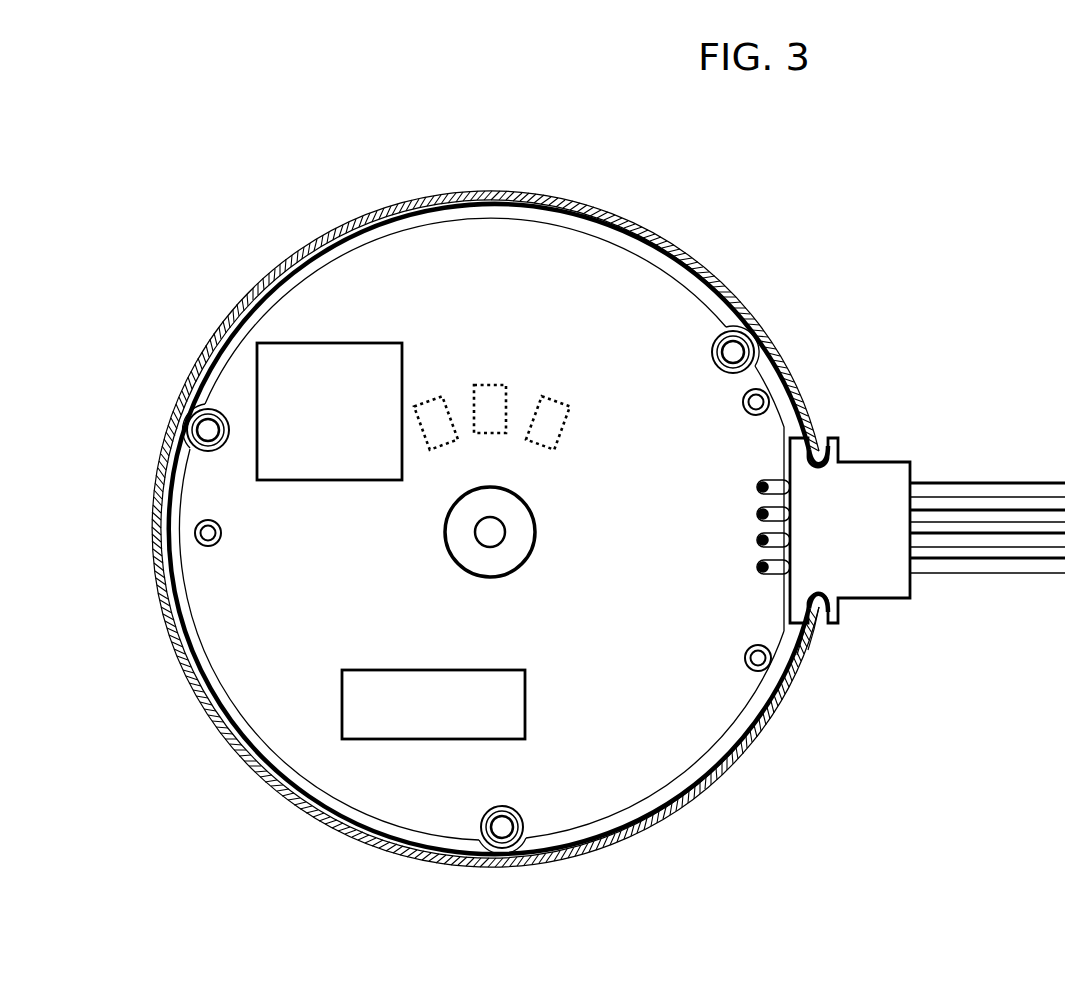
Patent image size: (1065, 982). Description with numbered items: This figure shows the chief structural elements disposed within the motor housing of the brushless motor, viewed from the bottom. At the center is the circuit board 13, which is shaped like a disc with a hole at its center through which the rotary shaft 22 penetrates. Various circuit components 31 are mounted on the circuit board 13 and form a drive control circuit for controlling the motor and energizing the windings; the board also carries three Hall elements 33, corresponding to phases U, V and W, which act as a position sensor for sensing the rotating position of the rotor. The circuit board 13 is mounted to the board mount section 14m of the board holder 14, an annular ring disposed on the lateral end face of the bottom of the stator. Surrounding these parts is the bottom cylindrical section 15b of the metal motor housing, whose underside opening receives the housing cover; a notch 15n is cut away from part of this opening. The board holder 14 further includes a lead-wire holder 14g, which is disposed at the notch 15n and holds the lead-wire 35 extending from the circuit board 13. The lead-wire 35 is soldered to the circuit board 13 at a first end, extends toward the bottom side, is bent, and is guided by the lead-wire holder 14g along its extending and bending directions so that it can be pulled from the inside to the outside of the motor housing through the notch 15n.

The circuit board 13 is at (263, 687).
The board holder 14 is at (752, 743).
The lead-wire holder 14g is at (873, 592).
The board mount section 14m is at (803, 658).
The bottom cylindrical section 15b is at (303, 250).
The notch 15n is at (825, 452).
The rotary shaft 22 is at (474, 537).
The circuit components 31 is at (275, 387).
The Hall elements 33 is at (553, 413).
The lead-wire 35 is at (778, 478).